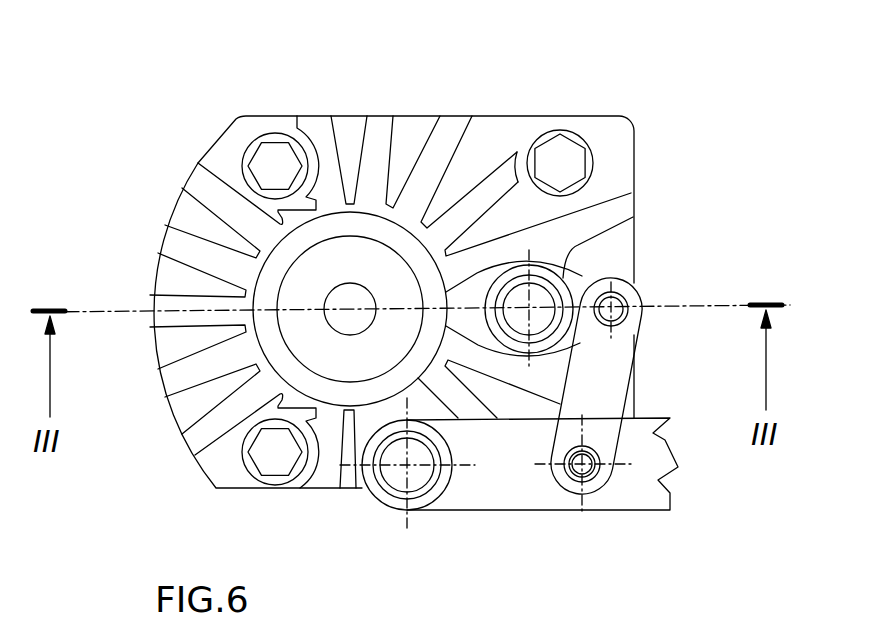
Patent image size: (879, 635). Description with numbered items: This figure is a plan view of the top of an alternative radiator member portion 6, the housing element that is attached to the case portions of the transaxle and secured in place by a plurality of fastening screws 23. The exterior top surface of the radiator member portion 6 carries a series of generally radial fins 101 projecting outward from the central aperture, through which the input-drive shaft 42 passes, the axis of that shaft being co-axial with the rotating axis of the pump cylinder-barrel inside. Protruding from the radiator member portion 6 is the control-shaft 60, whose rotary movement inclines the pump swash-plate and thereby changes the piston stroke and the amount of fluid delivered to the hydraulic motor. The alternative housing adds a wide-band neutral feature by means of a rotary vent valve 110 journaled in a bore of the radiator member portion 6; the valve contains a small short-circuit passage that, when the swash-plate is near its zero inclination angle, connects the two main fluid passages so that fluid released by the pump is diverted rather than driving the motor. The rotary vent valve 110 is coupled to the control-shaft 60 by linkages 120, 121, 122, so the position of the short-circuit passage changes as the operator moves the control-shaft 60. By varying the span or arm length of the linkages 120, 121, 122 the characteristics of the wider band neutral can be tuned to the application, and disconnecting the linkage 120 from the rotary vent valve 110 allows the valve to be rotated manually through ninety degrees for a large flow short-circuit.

The radiator member portion 6 is at (700, 65).
The fastening screws 23 is at (272, 162).
The input-drive shaft 42 is at (349, 300).
The control-shaft 60 is at (398, 474).
The radial fins 101 is at (447, 138).
The rotary vent valve 110 is at (538, 300).
The linkage 120 is at (578, 284).
The linkage 121 is at (612, 375).
The linkage 122 is at (532, 490).